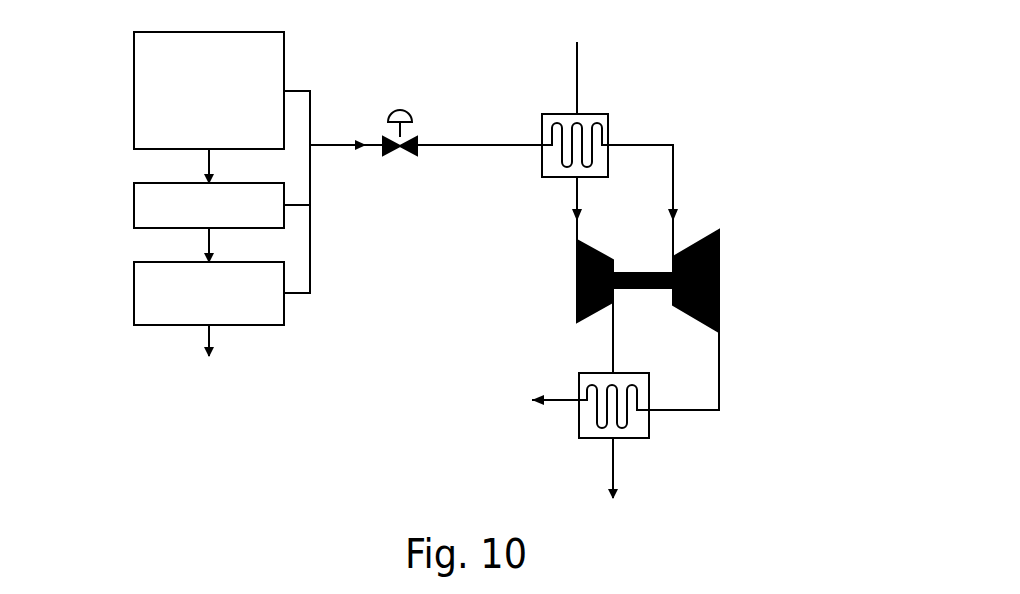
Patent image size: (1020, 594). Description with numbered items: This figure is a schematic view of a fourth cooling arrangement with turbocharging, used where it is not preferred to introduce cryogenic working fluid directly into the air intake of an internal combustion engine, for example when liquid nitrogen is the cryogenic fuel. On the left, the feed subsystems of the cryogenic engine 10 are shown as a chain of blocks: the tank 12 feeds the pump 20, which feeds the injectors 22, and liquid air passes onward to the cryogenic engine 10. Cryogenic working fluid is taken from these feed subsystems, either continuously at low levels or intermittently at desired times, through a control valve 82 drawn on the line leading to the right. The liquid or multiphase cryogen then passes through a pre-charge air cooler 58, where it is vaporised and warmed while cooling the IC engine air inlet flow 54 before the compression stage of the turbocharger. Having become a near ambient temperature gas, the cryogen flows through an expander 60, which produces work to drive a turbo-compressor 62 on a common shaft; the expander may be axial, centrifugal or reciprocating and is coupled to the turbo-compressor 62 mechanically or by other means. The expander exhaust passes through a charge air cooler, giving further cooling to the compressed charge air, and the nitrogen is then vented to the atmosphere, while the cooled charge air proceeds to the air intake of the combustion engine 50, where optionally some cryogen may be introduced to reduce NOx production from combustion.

The cryogenic engine 10 is at (210, 398).
The tank 12 is at (134, 89).
The pump 20 is at (134, 205).
The injectors 22 is at (134, 295).
The combustion engine 50 is at (649, 438).
The air inlet flow 54 is at (593, 61).
The pre-charge air cooler 58 is at (608, 114).
The expander 60 is at (720, 252).
The turbo-compressor 62 is at (577, 287).
The control valve 82 is at (400, 107).